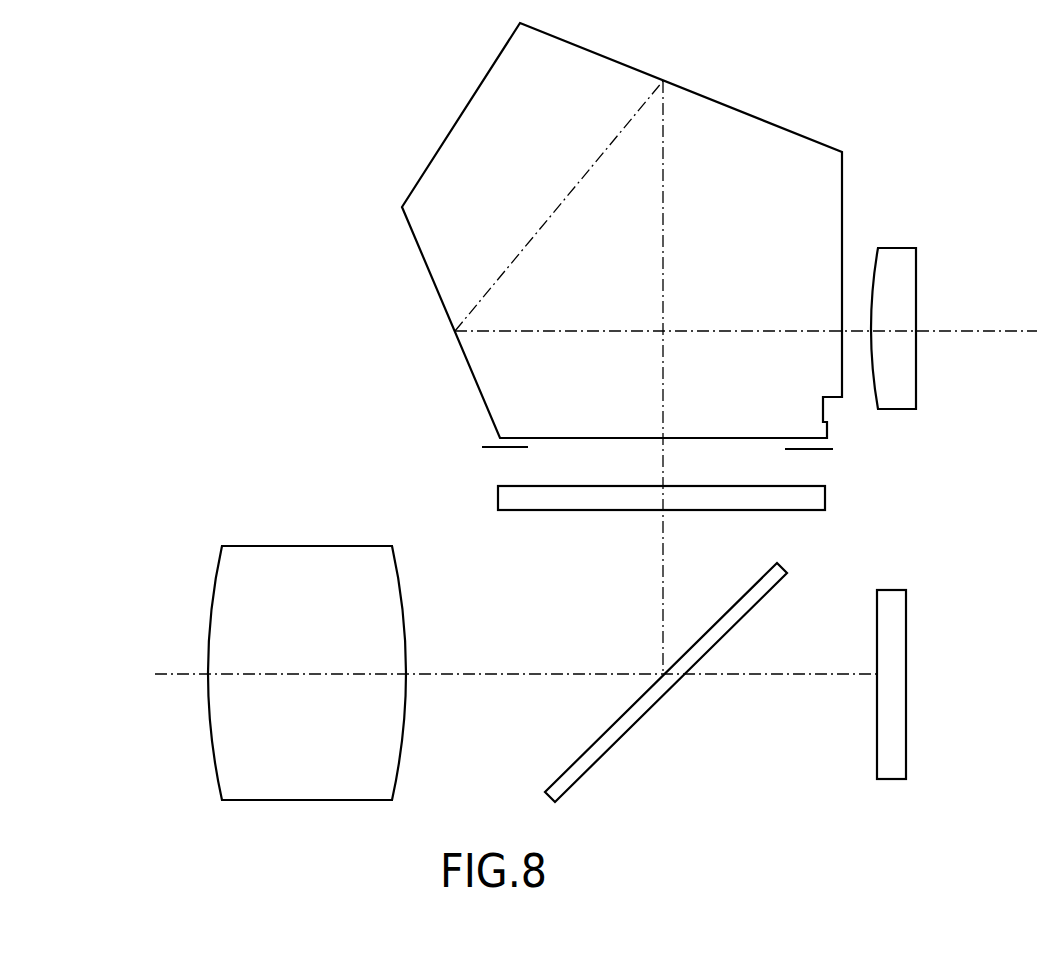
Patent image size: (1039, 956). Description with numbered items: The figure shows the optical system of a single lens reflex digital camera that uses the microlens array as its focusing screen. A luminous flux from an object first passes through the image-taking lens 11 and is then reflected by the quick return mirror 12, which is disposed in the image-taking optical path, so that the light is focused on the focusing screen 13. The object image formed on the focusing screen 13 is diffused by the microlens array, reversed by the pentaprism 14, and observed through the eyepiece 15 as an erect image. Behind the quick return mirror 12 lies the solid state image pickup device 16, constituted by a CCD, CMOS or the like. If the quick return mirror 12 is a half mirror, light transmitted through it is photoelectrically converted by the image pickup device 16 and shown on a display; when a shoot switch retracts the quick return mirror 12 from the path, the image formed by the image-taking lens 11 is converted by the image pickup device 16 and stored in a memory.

The image-taking lens 11 is at (291, 548).
The quick return mirror 12 is at (614, 736).
The focusing screen 13 is at (825, 497).
The pentaprism 14 is at (770, 127).
The eyepiece 15 is at (896, 250).
The solid state image pickup device 16 is at (897, 648).